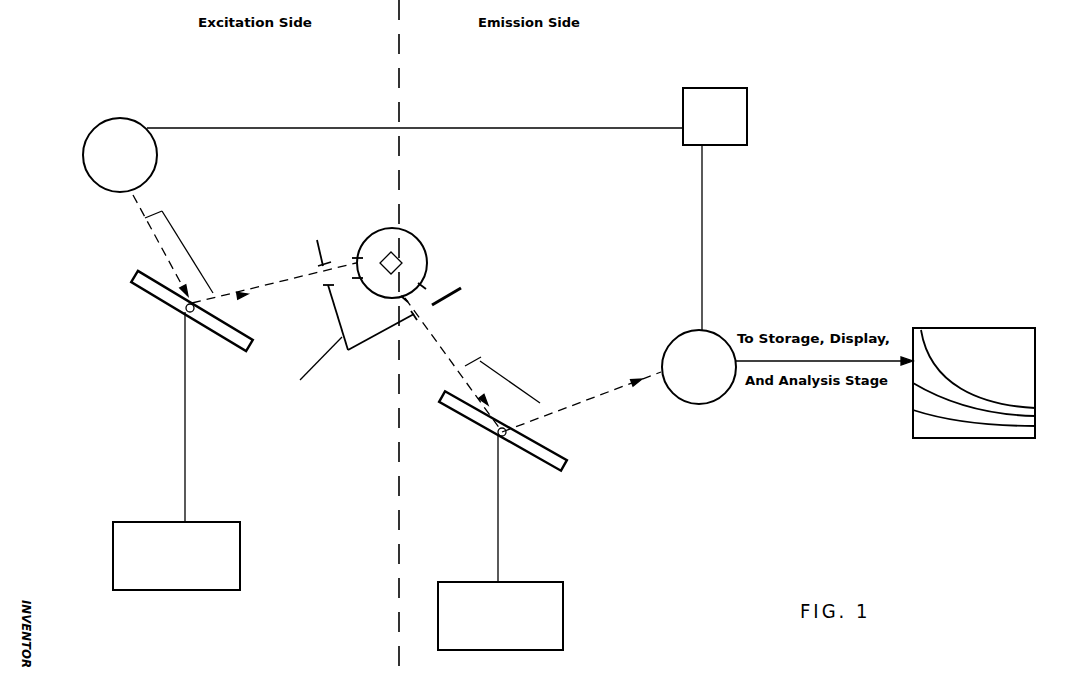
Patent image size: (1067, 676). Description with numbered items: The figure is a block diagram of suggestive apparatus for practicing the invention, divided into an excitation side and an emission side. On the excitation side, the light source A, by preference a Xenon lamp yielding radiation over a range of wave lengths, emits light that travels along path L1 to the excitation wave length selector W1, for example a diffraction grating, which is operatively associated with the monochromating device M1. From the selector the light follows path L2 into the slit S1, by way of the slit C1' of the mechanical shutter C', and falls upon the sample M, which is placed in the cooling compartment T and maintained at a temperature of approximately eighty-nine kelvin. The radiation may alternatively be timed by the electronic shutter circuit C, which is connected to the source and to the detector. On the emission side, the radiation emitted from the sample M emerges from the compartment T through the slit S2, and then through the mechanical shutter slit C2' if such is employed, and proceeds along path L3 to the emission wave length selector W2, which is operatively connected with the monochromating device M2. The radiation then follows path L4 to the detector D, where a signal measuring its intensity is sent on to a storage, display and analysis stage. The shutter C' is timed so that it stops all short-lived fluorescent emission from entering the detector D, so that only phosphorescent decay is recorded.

The light source A is at (383, 155).
The electronic shutter circuit C is at (793, 200).
The path L1 is at (218, 246).
The path L2 is at (274, 286).
The path L3 is at (510, 363).
The path L4 is at (581, 402).
The excitation wave length selector W1 is at (227, 342).
The emission wave length selector W2 is at (562, 466).
The monochromating device M1 is at (176, 556).
The monochromating device M2 is at (500, 616).
The sample M is at (412, 235).
The cooling compartment T is at (372, 297).
The slit S1 is at (355, 258).
The slit S2 is at (425, 291).
The slit of the mechanical shutter C1' is at (308, 253).
The mechanical shutter slit C2' is at (448, 307).
The mechanical shutter C' is at (302, 384).
The detector D is at (699, 367).